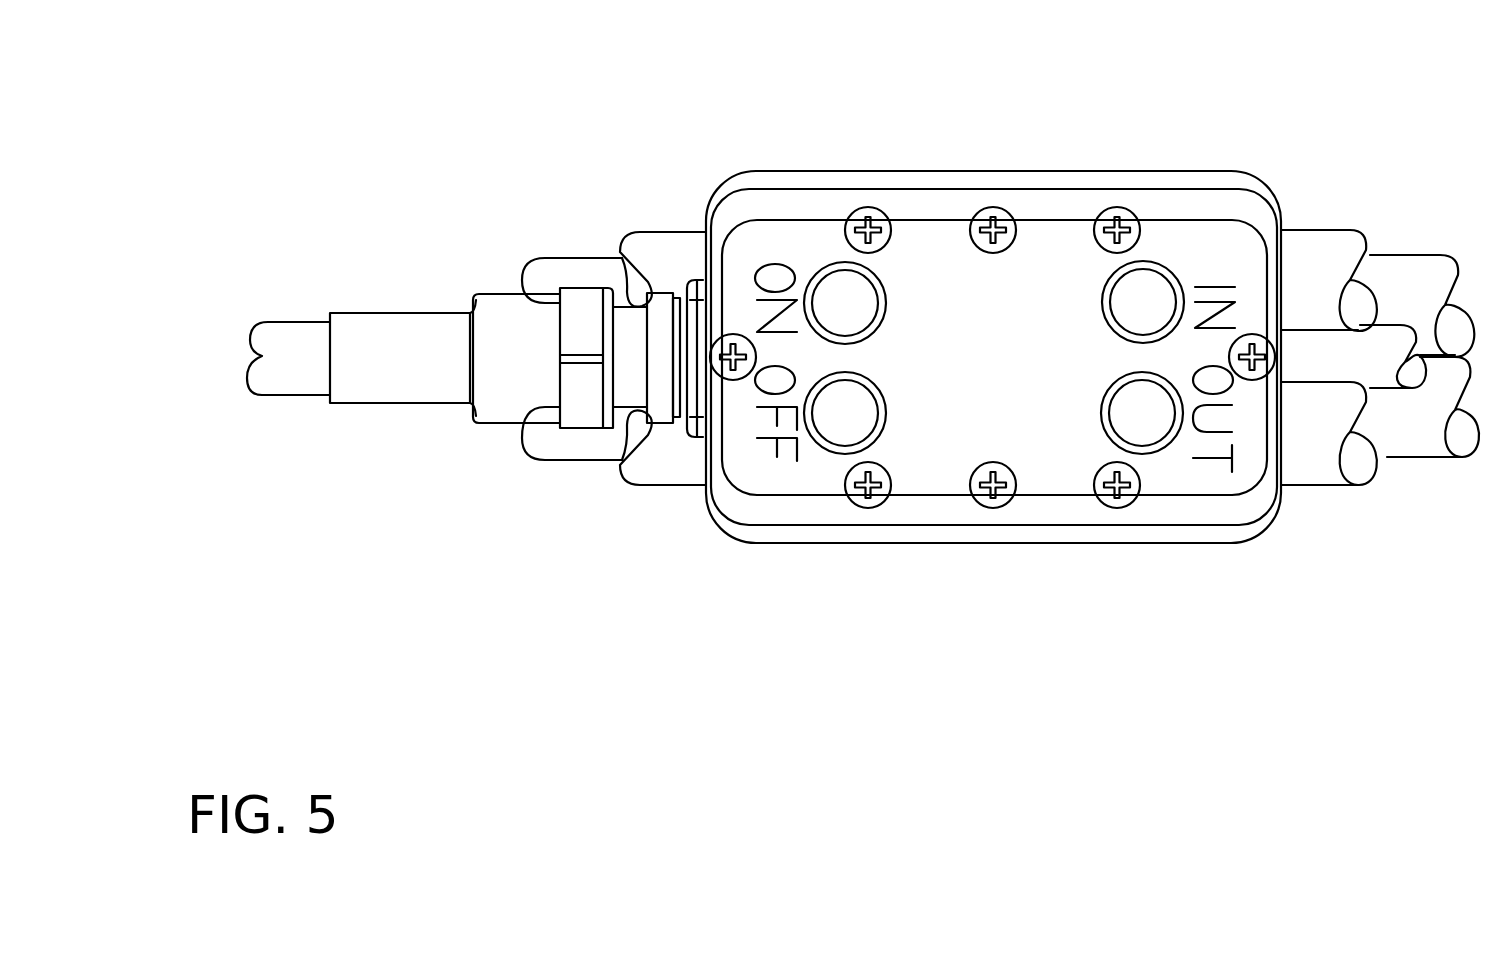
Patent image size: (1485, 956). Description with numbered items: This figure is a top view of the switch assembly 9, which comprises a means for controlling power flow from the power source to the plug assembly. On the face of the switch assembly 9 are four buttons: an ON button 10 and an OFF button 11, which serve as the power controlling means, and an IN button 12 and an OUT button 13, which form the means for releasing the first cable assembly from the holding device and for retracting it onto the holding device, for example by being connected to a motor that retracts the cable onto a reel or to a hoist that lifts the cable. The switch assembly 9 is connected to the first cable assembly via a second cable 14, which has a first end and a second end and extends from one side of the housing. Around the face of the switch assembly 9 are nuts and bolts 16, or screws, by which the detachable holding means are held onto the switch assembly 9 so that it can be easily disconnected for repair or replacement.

The switch assembly 9 is at (995, 171).
The ON button 10 is at (855, 300).
The OFF button 11 is at (860, 410).
The IN button 12 is at (1128, 302).
The OUT button 13 is at (1131, 413).
The second cable 14 is at (292, 382).
The nuts and bolts 16 is at (868, 508).